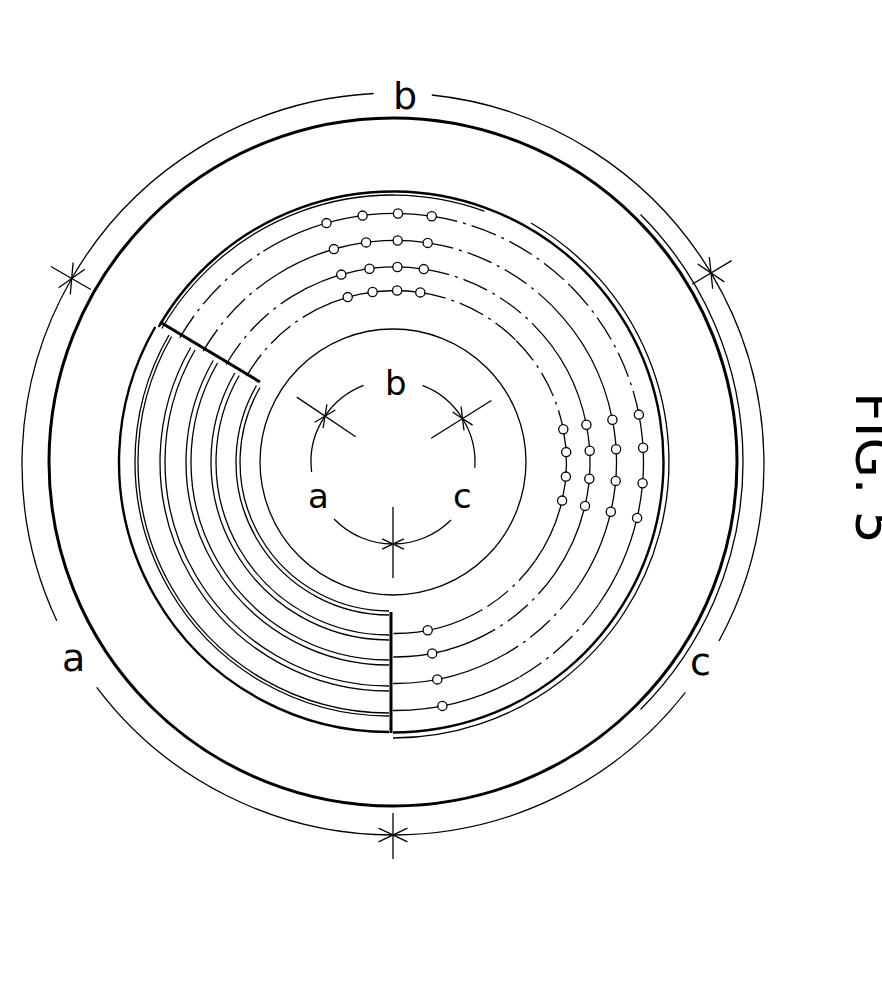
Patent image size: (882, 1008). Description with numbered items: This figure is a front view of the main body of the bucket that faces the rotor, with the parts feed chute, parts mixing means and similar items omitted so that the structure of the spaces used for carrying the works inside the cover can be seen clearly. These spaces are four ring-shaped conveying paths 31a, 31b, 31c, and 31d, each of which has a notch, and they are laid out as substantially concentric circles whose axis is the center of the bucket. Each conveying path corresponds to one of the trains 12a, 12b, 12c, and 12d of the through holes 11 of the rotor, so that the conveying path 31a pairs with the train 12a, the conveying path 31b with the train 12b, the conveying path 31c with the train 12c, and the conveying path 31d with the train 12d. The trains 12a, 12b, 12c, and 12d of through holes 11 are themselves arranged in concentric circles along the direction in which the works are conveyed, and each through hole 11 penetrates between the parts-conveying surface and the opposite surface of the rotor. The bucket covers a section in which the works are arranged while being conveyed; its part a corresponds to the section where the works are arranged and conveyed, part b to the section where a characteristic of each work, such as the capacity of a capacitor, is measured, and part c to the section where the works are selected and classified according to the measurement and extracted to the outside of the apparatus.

The through hole 11 is at (343, 290).
The train of through holes 12a is at (500, 237).
The train of through holes 12b is at (504, 265).
The train of through holes 12c is at (551, 299).
The train of through holes 12d is at (590, 353).
The conveying path 31a is at (290, 682).
The conveying path 31b is at (233, 615).
The conveying path 31c is at (213, 547).
The conveying path 31d is at (222, 467).